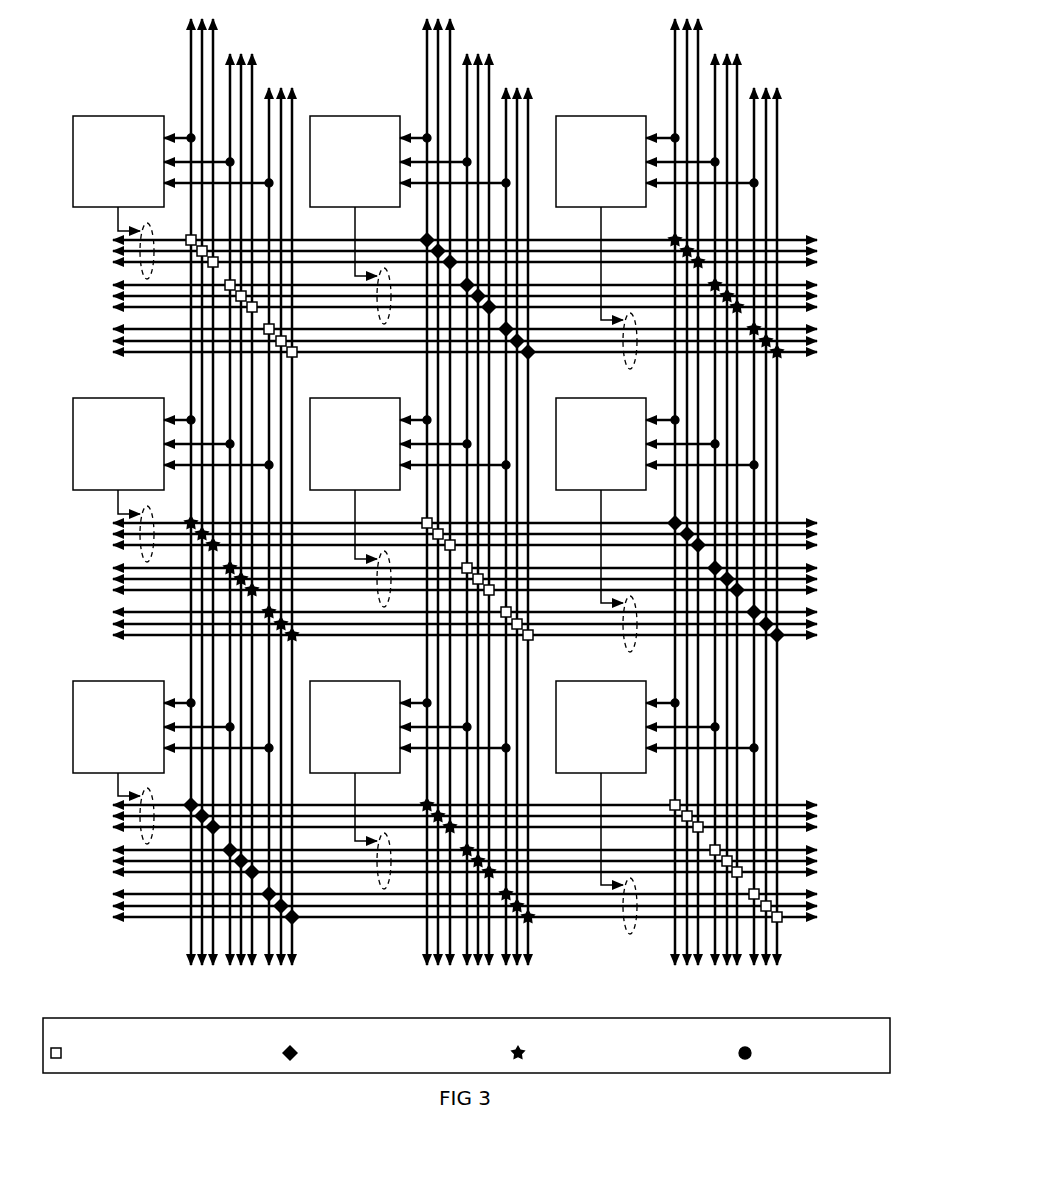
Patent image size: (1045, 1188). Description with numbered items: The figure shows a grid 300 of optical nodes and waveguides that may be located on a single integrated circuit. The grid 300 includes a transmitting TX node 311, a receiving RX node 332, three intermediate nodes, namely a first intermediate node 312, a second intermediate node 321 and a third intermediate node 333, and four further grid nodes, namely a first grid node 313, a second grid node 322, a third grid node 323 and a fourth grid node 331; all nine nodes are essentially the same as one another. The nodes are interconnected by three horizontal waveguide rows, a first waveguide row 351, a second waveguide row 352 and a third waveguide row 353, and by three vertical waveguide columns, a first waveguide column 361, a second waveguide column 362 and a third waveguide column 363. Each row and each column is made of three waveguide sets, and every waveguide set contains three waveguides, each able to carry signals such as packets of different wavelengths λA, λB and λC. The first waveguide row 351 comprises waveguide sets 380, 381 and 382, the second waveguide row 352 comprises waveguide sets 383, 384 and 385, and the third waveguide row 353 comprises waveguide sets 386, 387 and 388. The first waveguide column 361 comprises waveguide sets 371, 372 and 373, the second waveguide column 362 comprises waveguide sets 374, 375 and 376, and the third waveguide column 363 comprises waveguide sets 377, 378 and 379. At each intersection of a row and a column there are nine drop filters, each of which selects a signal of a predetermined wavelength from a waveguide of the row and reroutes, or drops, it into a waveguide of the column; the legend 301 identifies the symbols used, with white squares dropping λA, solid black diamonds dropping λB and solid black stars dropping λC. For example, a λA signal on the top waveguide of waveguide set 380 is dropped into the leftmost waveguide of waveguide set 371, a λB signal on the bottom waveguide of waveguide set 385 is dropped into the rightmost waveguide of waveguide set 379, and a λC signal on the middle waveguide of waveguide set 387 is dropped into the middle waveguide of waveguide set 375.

The grid 300 is at (165, 63).
The legend 301 is at (466, 1045).
The TX Node 311 is at (173, 197).
The Intermediate Node 1 312 is at (410, 220).
The Grid Node 1 313 is at (657, 242).
The Intermediate Node 2 321 is at (173, 480).
The Grid Node 2 322 is at (410, 502).
The Grid Node 3 323 is at (657, 525).
The Grid Node 4 331 is at (173, 762).
The RX Node 332 is at (410, 785).
The Intermediate Node 3 333 is at (657, 807).
The Waveguide Row 1 351 is at (460, 297).
The Waveguide Row 2 352 is at (460, 580).
The Waveguide Row 3 353 is at (460, 858).
The Waveguide Column 1 361 is at (277, 514).
The Waveguide Column 2 362 is at (513, 514).
The Waveguide Column 3 363 is at (762, 514).
The WS 1 371 is at (250, 492).
The WS 2 372 is at (289, 509).
The WS 3 373 is at (329, 526).
The WS 4 374 is at (486, 492).
The WS 5 375 is at (526, 509).
The WS 6 376 is at (565, 526).
The WS 7 377 is at (735, 492).
The WS 8 378 is at (775, 509).
The WS 9 379 is at (814, 526).
The WS 10 380 is at (489, 235).
The WS 11 381 is at (495, 288).
The WS 12 382 is at (489, 358).
The WS 13 383 is at (489, 518).
The WS 14 384 is at (495, 571).
The WS 15 385 is at (489, 641).
The WS 16 386 is at (489, 800).
The WS 17 387 is at (495, 853).
The WS 18 388 is at (489, 919).